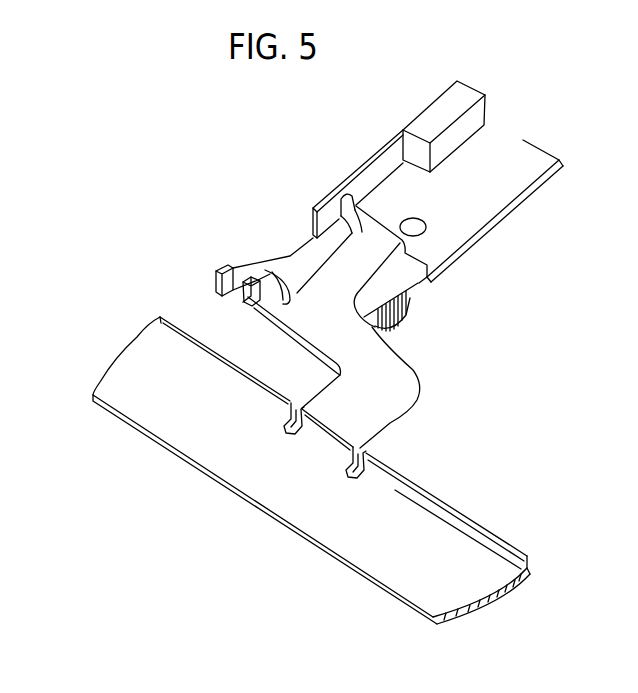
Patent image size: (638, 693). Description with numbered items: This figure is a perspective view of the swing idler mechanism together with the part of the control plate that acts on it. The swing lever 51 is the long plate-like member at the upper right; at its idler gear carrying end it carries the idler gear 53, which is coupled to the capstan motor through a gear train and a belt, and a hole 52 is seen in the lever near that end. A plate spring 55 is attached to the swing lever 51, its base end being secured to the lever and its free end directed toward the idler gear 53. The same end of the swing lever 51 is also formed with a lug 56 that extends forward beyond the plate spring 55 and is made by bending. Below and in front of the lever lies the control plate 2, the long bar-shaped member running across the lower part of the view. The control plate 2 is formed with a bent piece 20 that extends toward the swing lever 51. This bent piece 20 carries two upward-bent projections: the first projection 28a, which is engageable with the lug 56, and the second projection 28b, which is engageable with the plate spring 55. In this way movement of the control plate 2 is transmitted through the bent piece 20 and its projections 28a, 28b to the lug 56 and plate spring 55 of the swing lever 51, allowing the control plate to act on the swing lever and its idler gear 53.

The control plate 2 is at (163, 367).
The bent piece 20 is at (387, 393).
The first projection 28a is at (253, 307).
The second projection 28b is at (347, 203).
The swing lever 51 is at (433, 257).
The hole 52 is at (413, 228).
The idler gear 53 is at (407, 313).
The plate spring 55 is at (381, 168).
The lug 56 is at (223, 262).